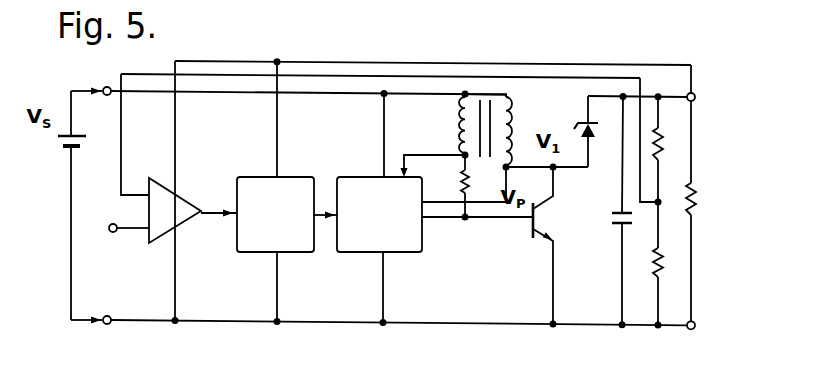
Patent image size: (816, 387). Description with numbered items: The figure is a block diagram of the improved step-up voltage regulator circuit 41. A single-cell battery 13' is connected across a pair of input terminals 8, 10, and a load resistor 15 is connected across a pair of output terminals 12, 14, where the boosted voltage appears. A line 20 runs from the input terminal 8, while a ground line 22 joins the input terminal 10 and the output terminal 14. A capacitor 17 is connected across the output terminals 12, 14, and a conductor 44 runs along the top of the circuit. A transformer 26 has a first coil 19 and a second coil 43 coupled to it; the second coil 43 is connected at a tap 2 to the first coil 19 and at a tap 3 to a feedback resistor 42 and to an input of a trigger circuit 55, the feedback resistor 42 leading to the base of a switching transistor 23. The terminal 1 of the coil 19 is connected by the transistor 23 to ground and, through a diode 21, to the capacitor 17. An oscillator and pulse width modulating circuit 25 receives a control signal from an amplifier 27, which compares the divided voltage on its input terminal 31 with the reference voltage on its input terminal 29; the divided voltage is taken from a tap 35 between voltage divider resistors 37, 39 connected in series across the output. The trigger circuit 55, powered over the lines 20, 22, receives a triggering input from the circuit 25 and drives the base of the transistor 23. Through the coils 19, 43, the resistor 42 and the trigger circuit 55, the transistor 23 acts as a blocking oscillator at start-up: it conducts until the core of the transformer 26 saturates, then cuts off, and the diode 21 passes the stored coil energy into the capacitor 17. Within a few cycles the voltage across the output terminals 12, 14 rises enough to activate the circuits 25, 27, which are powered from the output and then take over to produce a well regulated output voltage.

The input terminal 8 is at (105, 87).
The input terminal 10 is at (107, 314).
The output terminal 12 is at (695, 101).
The output terminal 14 is at (695, 323).
The battery 13' is at (55, 205).
The line 20 is at (163, 93).
The ground line 22 is at (437, 324).
The conductor 44 is at (419, 62).
The circuit 41 is at (329, 46).
The oscillator and pulse width modulating circuit 25 is at (238, 177).
The trigger circuit 55 is at (337, 178).
The amplifier 27 is at (183, 226).
The amplifier input terminal 29 is at (136, 232).
The amplifier input terminal 31 is at (135, 194).
The transformer 26 is at (481, 127).
The second coil 43 is at (456, 132).
The feedback resistor 42 is at (486, 143).
The coil 19 is at (513, 131).
The tap 3 is at (458, 186).
The tap 2 is at (514, 93).
The terminal 1 is at (511, 157).
The diode 21 is at (579, 123).
The switching transistor 23 is at (532, 230).
The capacitor 17 is at (613, 225).
The voltage divider resistor 37 is at (660, 136).
The tap 35 is at (661, 206).
The voltage divider resistor 39 is at (660, 274).
The load resistor 15 is at (693, 187).